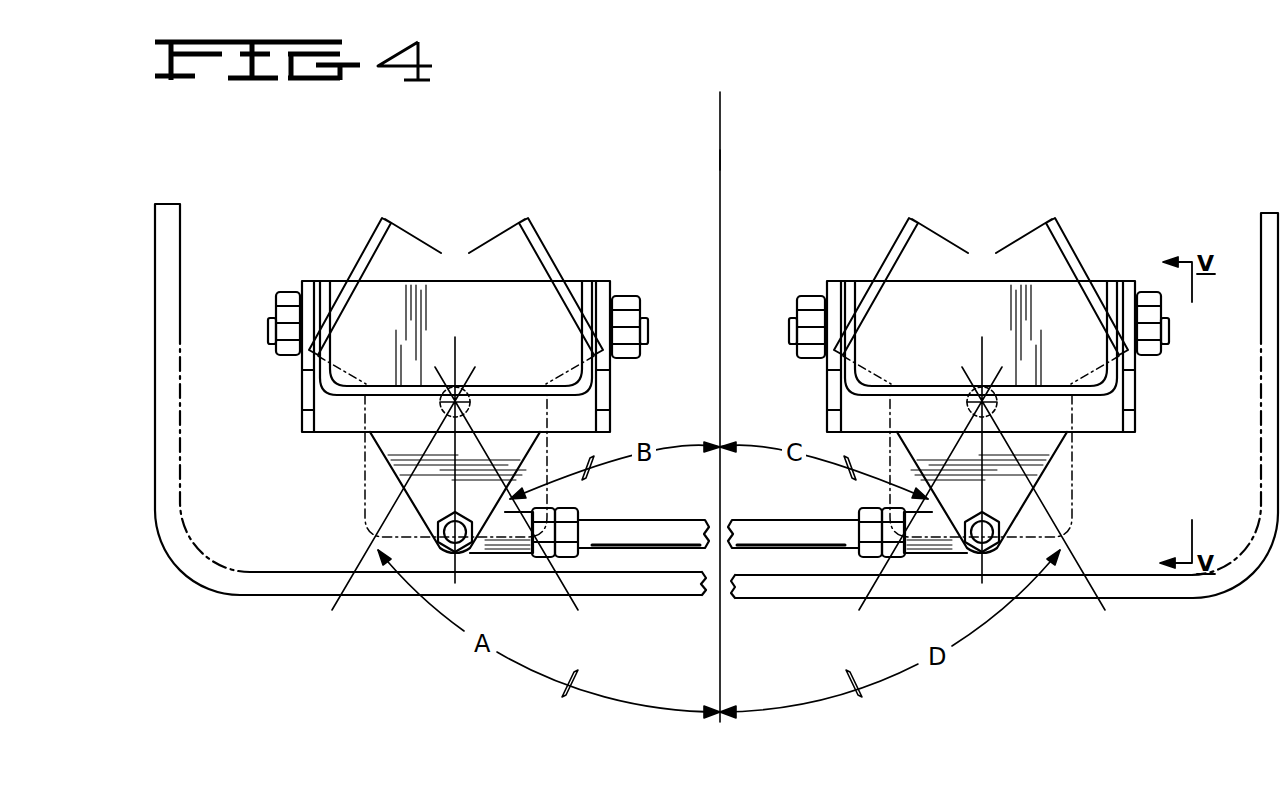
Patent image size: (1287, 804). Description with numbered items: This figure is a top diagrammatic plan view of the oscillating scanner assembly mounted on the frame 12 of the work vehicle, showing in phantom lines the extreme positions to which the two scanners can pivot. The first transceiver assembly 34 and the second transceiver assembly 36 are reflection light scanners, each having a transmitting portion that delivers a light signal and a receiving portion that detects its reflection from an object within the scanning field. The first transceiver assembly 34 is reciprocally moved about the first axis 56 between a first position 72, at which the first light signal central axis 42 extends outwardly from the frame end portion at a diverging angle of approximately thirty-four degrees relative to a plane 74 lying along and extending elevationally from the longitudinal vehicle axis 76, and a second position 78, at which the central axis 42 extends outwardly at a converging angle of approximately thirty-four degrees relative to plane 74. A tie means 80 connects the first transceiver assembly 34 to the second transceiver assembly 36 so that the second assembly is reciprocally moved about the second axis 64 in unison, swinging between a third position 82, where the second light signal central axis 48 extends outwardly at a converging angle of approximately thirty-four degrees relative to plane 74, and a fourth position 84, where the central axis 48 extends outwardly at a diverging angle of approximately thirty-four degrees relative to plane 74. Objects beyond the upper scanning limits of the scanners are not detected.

The frame 12 is at (1260, 405).
The first transceiver assembly 34 is at (614, 283).
The second transceiver assembly 36 is at (1109, 283).
The central axis of the first light signal 42 is at (462, 556).
The central axis of the second light signal 48 is at (975, 556).
The first axis 56 is at (470, 404).
The second axis 64 is at (968, 404).
The first position 72 is at (362, 250).
The second position 78 is at (549, 250).
The third position 82 is at (888, 250).
The fourth position 84 is at (1068, 245).
The plane 74 is at (722, 128).
The longitudinal vehicle axis 76 is at (722, 160).
The tie means 80 is at (778, 560).